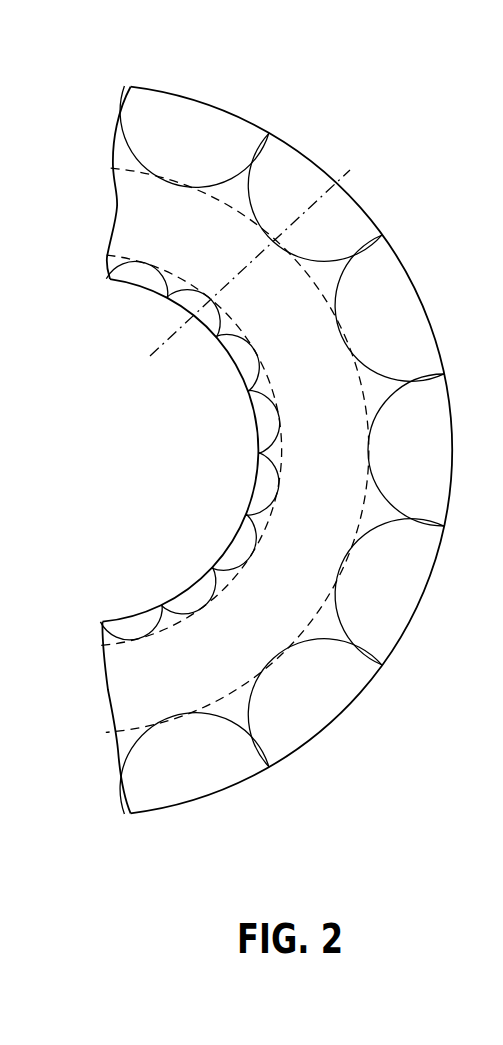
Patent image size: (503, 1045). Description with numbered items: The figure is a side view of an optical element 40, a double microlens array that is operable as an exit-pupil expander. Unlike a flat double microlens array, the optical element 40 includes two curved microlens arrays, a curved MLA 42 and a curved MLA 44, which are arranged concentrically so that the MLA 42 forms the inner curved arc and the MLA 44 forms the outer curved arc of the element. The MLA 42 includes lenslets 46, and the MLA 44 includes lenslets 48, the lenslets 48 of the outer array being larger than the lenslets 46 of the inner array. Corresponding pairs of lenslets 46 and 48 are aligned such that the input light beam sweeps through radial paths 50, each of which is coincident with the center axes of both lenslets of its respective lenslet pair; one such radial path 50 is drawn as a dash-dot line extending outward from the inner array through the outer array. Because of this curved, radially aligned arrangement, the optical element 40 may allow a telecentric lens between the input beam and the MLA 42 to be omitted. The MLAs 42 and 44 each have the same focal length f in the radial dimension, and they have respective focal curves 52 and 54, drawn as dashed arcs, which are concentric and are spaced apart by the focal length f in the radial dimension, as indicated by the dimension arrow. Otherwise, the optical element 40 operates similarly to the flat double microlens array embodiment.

The optical element 40 is at (336, 783).
The curved MLA 42 is at (138, 292).
The curved MLA 44 is at (133, 87).
The lenslets 46 is at (184, 293).
The lenslets 48 is at (336, 262).
The radial paths 50 is at (165, 350).
The focal curve 52 is at (96, 646).
The focal curve 54 is at (106, 732).
The focal length f is at (358, 418).